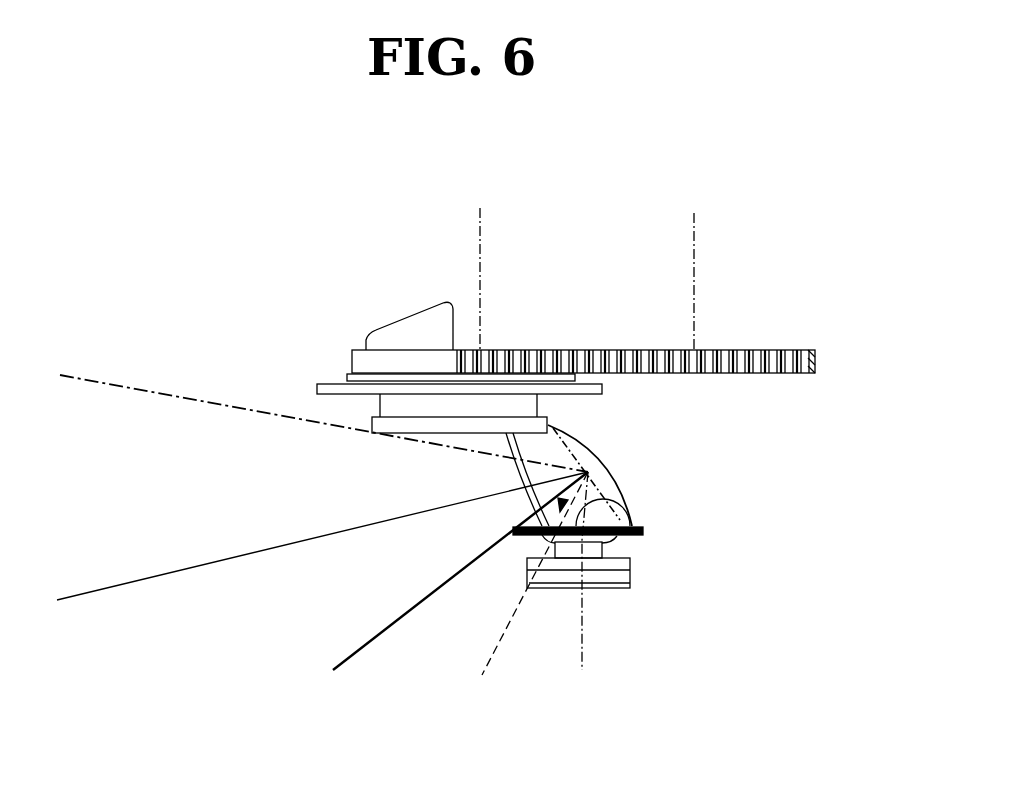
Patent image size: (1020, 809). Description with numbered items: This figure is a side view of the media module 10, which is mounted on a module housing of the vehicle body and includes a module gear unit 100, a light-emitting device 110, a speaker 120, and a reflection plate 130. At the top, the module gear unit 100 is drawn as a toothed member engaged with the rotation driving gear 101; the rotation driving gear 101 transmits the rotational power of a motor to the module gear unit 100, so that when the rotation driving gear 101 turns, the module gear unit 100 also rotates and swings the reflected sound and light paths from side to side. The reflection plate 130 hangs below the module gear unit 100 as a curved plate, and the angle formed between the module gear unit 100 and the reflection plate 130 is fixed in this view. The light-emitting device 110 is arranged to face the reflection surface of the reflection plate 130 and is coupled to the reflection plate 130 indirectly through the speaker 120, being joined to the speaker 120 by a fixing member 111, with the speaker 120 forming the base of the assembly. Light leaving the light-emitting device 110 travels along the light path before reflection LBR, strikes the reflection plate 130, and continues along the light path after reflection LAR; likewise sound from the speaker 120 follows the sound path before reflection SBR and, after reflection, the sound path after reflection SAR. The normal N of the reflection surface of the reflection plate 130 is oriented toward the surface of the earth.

The media module 10 is at (501, 300).
The module gear unit 100 is at (530, 348).
The rotation driving gear 101 is at (753, 349).
The light-emitting device 110 is at (612, 502).
The fixing member 111 is at (582, 534).
The speaker 120 is at (630, 575).
The reflection plate 130 is at (586, 456).
The sound path after reflection SAR is at (143, 390).
The light path after reflection LAR is at (247, 553).
The normal N is at (370, 641).
The light path before reflection LBR is at (496, 650).
The sound path before reflection SBR is at (583, 637).